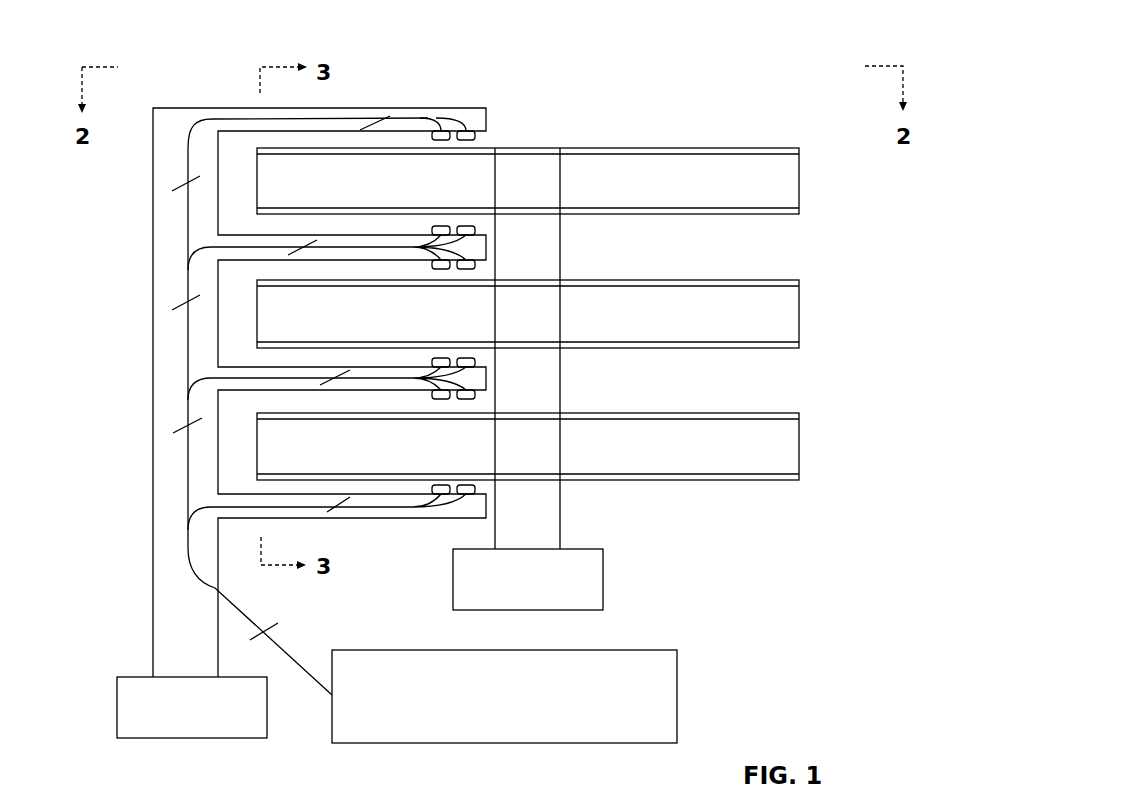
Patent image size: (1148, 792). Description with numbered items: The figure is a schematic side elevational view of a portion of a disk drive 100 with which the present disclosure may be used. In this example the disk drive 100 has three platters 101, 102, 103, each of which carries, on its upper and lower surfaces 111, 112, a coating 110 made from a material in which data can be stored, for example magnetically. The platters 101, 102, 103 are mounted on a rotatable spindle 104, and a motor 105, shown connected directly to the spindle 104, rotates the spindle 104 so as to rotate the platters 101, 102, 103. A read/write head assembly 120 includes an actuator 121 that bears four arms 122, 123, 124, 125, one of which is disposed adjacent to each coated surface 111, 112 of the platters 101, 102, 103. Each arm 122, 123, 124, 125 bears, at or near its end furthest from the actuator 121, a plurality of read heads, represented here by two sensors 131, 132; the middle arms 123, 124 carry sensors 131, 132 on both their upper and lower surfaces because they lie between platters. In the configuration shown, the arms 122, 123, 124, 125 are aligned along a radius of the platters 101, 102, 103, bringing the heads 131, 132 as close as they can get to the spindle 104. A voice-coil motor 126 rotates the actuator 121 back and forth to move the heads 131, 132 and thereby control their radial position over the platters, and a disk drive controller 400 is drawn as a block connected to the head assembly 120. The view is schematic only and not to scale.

The disk drive 100 is at (195, 70).
The platter 101 is at (800, 181).
The platter 102 is at (800, 314).
The platter 103 is at (800, 447).
The spindle 104 is at (537, 152).
The motor 105 is at (603, 580).
The coating 110 is at (800, 477).
The upper surface 111 is at (637, 413).
The lower surface 112 is at (635, 480).
The read/write head assembly 120 is at (147, 247).
The actuator 121 is at (153, 322).
The arm 122 is at (318, 108).
The arm 123 is at (335, 235).
The arm 124 is at (333, 367).
The arm 125 is at (333, 494).
The voice-coil motor 126 is at (140, 677).
The sensor 131 is at (470, 485).
The sensor 132 is at (441, 485).
The disk drive controller 400 is at (395, 650).